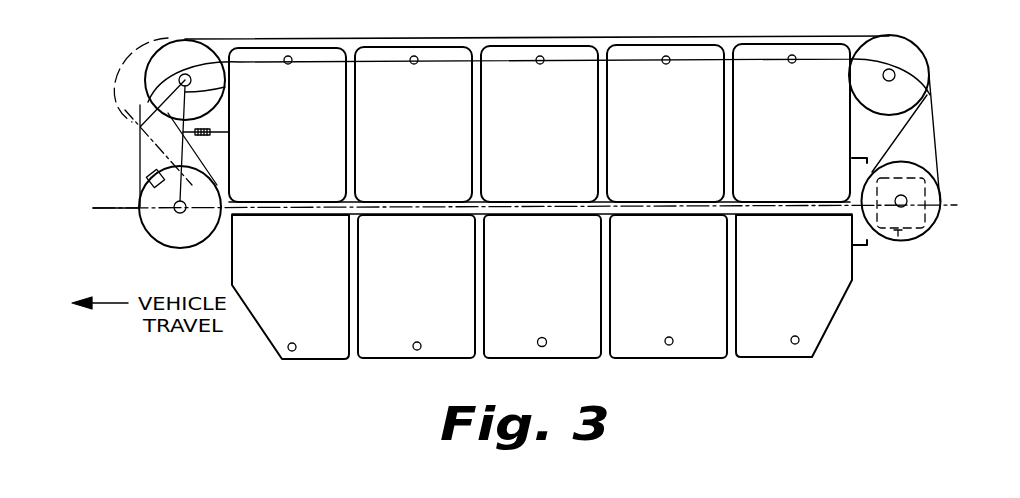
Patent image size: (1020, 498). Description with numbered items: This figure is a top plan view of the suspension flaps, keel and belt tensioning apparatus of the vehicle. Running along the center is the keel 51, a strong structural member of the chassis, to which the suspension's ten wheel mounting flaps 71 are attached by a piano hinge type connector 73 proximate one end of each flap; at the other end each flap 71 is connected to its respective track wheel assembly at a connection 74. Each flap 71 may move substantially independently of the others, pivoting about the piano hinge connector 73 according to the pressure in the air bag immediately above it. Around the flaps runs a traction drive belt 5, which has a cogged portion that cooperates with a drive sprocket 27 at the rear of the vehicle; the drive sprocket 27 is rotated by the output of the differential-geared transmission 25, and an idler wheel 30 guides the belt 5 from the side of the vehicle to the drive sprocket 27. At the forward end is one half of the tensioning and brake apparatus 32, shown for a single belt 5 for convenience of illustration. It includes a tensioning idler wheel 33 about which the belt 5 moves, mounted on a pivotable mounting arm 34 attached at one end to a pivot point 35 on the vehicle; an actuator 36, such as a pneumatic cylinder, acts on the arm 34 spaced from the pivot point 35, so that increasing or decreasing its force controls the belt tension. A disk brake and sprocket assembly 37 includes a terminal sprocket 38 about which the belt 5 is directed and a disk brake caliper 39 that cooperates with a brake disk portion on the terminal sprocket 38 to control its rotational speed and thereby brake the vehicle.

The traction drive belt 5 is at (857, 35).
The differential-geared transmission 25 is at (897, 237).
The drive sprocket 27 is at (908, 238).
The idler wheel 30 is at (900, 47).
The tensioning and brake apparatus 32 is at (133, 128).
The tensioning idler wheel 33 is at (190, 50).
The pivotable mounting arm 34 is at (226, 88).
The pivot point 35 is at (203, 192).
The actuator 36 is at (207, 135).
The disk brake and sprocket assembly 37 is at (132, 213).
The terminal sprocket 38 is at (167, 237).
The disk brake caliper 39 is at (146, 174).
The keel 51 is at (522, 205).
The wheel mounting flap 71 is at (717, 112).
The piano hinge type connector 73 is at (645, 202).
The connection 74 is at (544, 337).